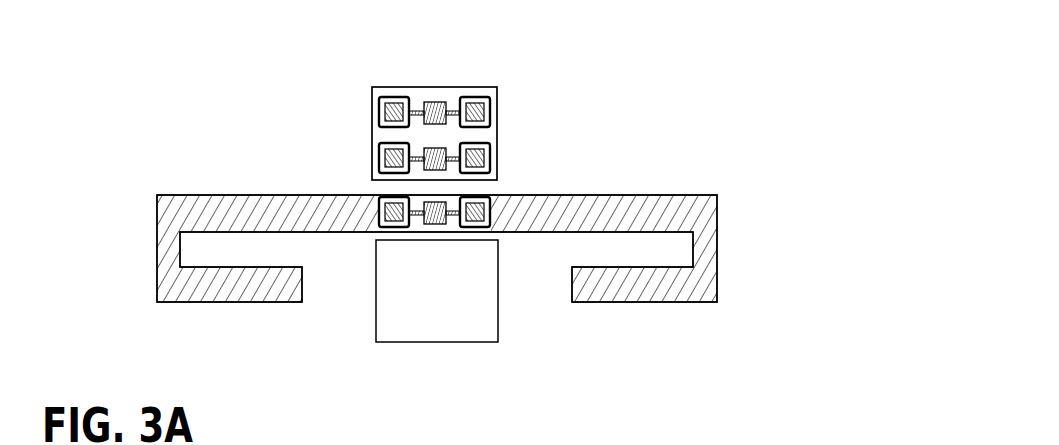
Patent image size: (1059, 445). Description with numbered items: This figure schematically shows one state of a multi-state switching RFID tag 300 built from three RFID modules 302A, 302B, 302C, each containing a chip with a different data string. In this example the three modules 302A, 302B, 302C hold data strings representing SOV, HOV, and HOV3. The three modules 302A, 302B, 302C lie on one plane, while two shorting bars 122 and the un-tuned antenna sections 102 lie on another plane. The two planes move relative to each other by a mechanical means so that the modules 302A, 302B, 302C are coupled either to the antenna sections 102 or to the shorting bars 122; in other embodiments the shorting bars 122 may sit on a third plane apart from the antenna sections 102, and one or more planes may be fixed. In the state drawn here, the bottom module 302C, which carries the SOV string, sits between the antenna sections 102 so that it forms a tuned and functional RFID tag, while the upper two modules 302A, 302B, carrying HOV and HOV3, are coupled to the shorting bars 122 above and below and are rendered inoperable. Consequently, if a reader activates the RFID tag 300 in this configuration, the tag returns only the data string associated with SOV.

The multi-state switching RFID tag 300 is at (668, 80).
The antenna sections 102 is at (245, 195).
The shorting bars 122 is at (435, 89).
The RFID module 302A is at (372, 92).
The RFID module 302B is at (372, 156).
The RFID module 302C is at (378, 206).
The HOV3 data string HOV3 is at (494, 110).
The HOV data string HOV is at (494, 160).
The SOV data string SOV is at (374, 231).